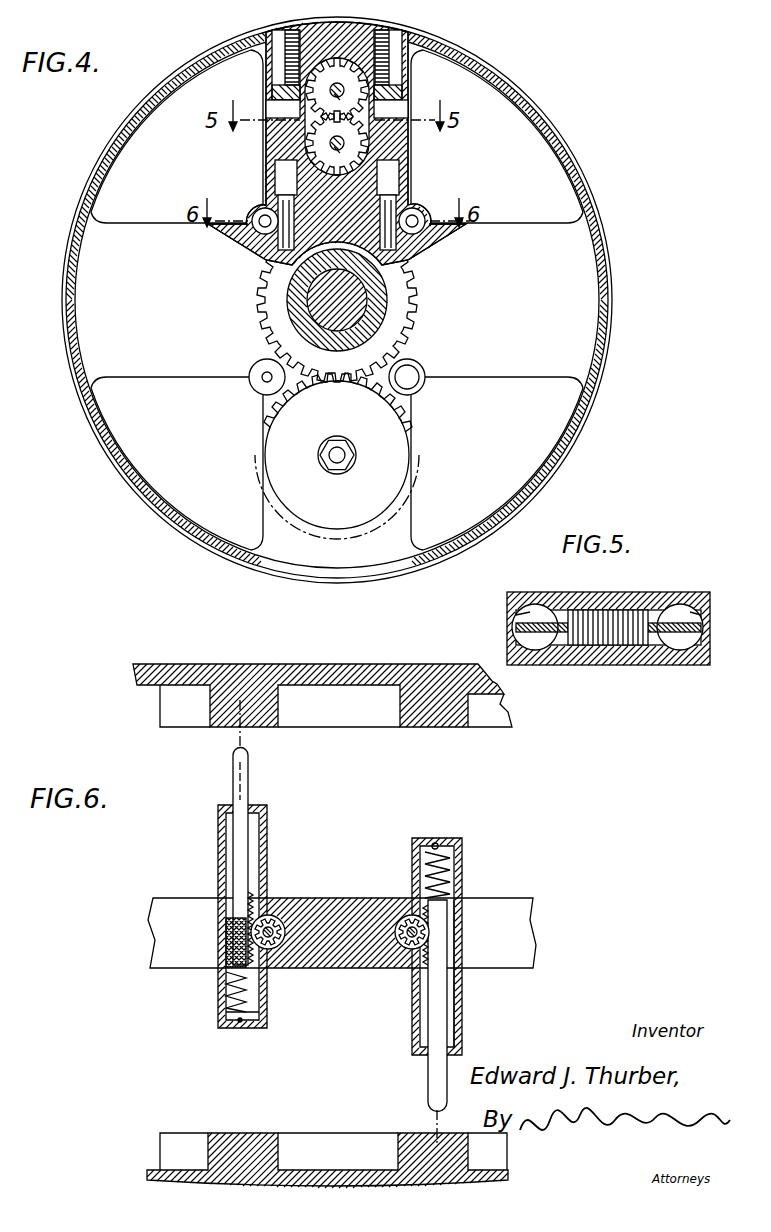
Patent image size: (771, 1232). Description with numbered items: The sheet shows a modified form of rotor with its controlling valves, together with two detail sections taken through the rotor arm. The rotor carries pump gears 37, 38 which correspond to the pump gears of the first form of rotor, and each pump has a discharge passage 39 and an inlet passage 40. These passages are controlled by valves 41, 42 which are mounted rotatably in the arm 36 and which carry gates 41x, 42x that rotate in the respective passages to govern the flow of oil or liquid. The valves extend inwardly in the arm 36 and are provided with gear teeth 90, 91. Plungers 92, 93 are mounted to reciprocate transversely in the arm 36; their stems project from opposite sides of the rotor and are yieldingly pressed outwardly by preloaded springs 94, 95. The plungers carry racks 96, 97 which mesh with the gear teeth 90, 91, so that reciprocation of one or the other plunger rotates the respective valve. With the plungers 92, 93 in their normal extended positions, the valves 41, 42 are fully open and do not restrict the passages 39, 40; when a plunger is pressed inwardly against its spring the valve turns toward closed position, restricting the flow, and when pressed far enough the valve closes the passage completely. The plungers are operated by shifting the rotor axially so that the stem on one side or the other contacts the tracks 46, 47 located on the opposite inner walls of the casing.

In FIG. 4, the arm 36 is at (337, 186).
In FIG. 5, the arm 36 is at (670, 580).
In FIG. 6, the arm 36 is at (365, 958).
In FIG. 4, the pump gear 37 is at (300, 150).
In FIG. 5, the pump gear 37 is at (604, 620).
In FIG. 4, the pump gear 38 is at (270, 80).
In FIG. 4, the discharge passage 39 is at (398, 97).
In FIG. 5, the discharge passage 39 is at (726, 556).
In FIG. 4, the inlet passage 40 is at (268, 122).
In FIG. 5, the inlet passage 40 is at (512, 612).
In FIG. 4, the discharge valve 41 is at (412, 148).
In FIG. 5, the discharge valve 41 is at (688, 645).
In FIG. 5, the gate 41x is at (657, 648).
In FIG. 4, the inlet valve 42 is at (262, 142).
In FIG. 5, the inlet valve 42 is at (530, 646).
In FIG. 5, the gate 42x is at (545, 636).
In FIG. 6, the track 46 is at (263, 717).
In FIG. 6, the track 47 is at (238, 1147).
In FIG. 4, the gear teeth 90 is at (397, 210).
In FIG. 6, the gear teeth 90 is at (405, 912).
In FIG. 4, the gear teeth 91 is at (280, 212).
In FIG. 6, the gear teeth 91 is at (268, 902).
In FIG. 4, the plunger 92 is at (413, 234).
In FIG. 6, the plunger 92 is at (452, 998).
In FIG. 4, the plunger 93 is at (258, 243).
In FIG. 6, the plunger 93 is at (232, 842).
In FIG. 6, the preloaded spring 94 is at (462, 865).
In FIG. 6, the preloaded spring 95 is at (217, 992).
In FIG. 6, the rack 96 is at (432, 960).
In FIG. 6, the rack 97 is at (253, 896).